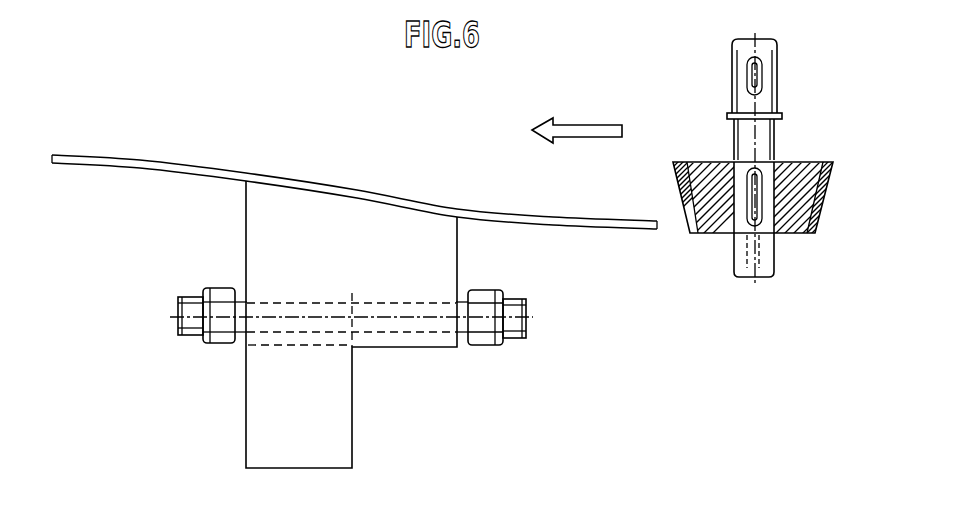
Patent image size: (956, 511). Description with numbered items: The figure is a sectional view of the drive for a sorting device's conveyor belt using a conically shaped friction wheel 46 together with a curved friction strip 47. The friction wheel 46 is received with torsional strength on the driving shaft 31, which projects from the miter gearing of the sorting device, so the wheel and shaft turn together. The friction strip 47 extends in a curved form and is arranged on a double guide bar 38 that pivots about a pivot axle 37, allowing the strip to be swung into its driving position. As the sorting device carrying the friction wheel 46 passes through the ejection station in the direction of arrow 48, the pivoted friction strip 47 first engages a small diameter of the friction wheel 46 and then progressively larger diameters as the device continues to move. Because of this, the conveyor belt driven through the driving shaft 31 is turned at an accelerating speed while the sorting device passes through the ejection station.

The friction strip 47 is at (137, 163).
The arrow 48 is at (582, 130).
The driving shaft 31 is at (764, 136).
The conically shaped friction wheel 46 is at (820, 212).
The pivot axle 37 is at (387, 318).
The double guide bar 38 is at (362, 451).